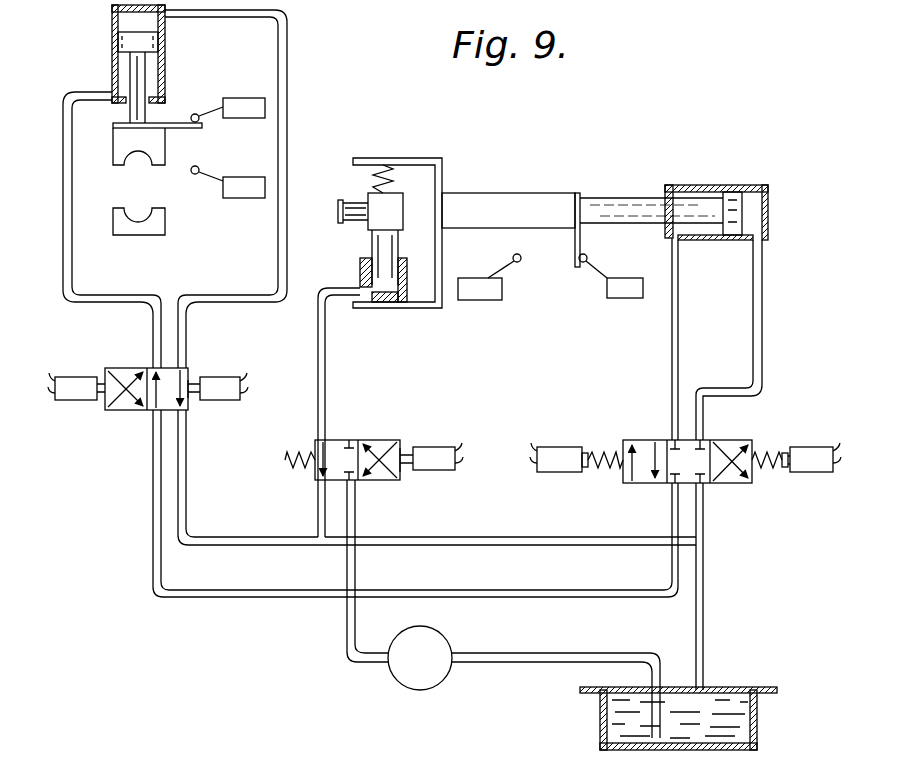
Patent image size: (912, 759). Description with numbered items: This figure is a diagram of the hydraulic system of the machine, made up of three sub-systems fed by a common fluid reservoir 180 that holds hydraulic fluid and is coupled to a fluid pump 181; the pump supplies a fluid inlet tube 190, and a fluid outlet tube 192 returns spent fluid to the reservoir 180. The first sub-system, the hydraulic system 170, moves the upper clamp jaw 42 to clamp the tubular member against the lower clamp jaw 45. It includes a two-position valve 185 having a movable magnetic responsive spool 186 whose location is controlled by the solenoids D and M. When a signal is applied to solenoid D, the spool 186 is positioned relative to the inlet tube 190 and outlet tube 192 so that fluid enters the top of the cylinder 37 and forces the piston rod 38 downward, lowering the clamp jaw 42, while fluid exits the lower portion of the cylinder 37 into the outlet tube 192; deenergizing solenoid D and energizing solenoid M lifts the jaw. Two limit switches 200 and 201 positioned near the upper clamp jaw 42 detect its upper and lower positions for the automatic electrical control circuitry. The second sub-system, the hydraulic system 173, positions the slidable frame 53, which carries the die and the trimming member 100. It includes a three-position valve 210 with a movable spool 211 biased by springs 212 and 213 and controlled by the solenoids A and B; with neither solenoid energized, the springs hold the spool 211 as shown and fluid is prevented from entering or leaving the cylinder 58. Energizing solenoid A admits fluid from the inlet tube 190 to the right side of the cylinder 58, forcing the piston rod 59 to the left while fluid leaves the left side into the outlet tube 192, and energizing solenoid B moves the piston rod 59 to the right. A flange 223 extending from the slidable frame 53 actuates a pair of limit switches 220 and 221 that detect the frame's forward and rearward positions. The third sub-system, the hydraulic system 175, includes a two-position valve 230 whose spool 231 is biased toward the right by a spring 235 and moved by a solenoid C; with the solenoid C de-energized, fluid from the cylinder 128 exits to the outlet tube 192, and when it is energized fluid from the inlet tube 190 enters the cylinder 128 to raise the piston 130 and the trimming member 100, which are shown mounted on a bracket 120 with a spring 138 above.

The cylinder 37 is at (112, 21).
The piston rod 38 is at (135, 88).
The upper clamp jaw 42 is at (118, 142).
The lower clamp jaw 45 is at (118, 219).
The limit switch 200 is at (243, 102).
The limit switch 201 is at (247, 196).
The hydraulic system 170 is at (115, 337).
The two-position valve 185 is at (116, 413).
The spool 186 is at (190, 370).
The solenoid D is at (62, 396).
The solenoid M is at (214, 400).
The bracket 120 is at (414, 208).
The spring 138 is at (395, 172).
The trimming member 100 is at (340, 210).
The piston 130 is at (380, 248).
The cylinder 128 is at (360, 275).
The limit switch 220 is at (488, 292).
The slidable frame 53 is at (530, 202).
The flange 223 is at (581, 242).
The limit switch 221 is at (625, 292).
The piston rod 59 is at (612, 212).
The cylinder 58 is at (701, 185).
The hydraulic system 175 is at (407, 380).
The two-position valve 230 is at (396, 438).
The spool 231 is at (368, 481).
The spring 235 is at (295, 472).
The solenoid C is at (435, 471).
The fluid inlet tube 190 is at (348, 623).
The fluid pump 181 is at (446, 641).
The hydraulic system 173 is at (648, 388).
The spool 211 is at (650, 484).
The spring 212 is at (600, 448).
The three-position valve 210 is at (754, 432).
The spring 213 is at (762, 455).
The solenoid B is at (569, 473).
The solenoid A is at (820, 473).
The fluid outlet tube 192 is at (702, 632).
The fluid reservoir 180 is at (742, 716).